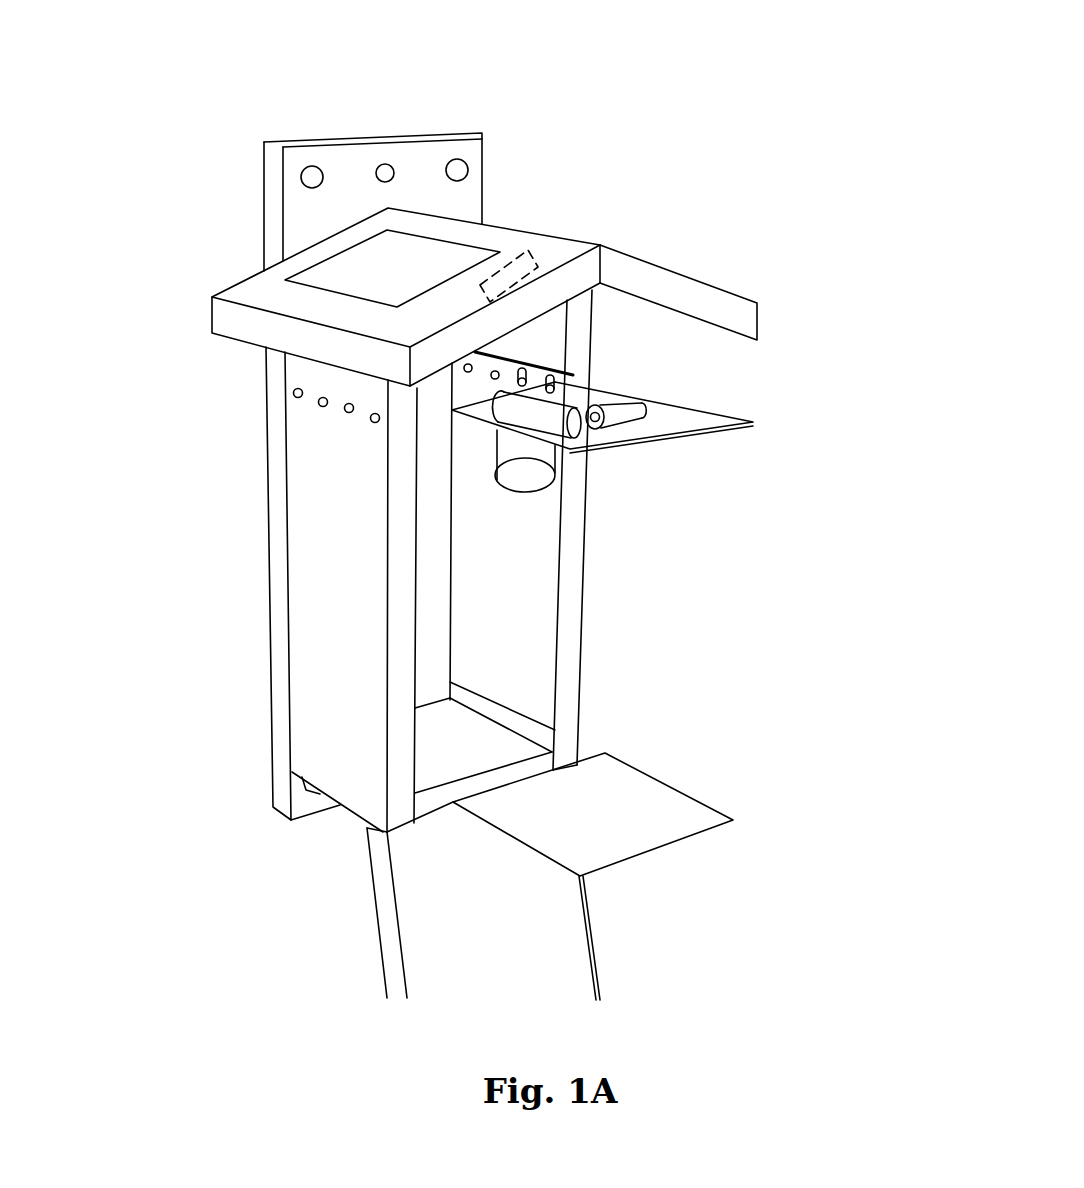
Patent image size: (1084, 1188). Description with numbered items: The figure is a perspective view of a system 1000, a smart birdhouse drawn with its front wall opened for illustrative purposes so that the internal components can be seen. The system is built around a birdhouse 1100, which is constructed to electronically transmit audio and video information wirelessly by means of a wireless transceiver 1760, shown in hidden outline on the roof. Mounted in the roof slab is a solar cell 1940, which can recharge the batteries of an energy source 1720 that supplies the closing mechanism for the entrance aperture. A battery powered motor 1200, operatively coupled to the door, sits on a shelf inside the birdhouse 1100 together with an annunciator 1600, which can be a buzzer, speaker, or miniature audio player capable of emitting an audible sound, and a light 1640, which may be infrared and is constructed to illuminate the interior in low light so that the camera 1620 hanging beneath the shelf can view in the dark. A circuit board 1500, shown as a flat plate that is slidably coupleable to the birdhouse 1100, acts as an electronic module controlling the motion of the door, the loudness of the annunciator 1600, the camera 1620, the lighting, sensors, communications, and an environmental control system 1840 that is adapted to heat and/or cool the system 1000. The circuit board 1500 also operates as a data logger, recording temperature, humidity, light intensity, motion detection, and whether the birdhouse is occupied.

The system 1000 is at (484, 428).
The birdhouse 1100 is at (437, 588).
The battery powered motor 1200 is at (627, 420).
The circuit board 1500 is at (705, 417).
The annunciator 1600 is at (647, 415).
The camera 1620 is at (532, 475).
The light 1640 is at (678, 432).
The energy source 1720 is at (530, 420).
The wireless transceiver 1760 is at (537, 265).
The environmental control system 1840 is at (632, 385).
The solar cell 1940 is at (375, 272).